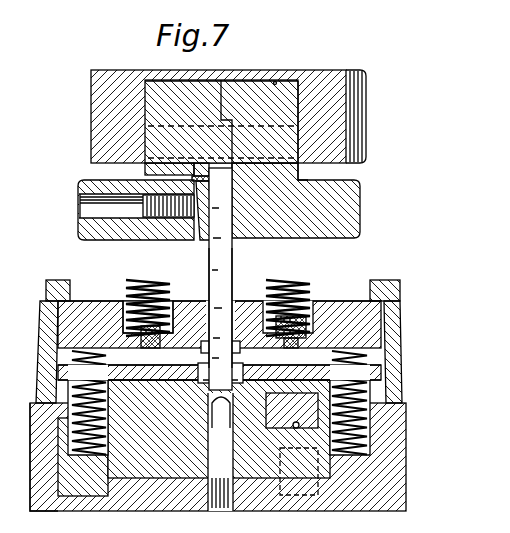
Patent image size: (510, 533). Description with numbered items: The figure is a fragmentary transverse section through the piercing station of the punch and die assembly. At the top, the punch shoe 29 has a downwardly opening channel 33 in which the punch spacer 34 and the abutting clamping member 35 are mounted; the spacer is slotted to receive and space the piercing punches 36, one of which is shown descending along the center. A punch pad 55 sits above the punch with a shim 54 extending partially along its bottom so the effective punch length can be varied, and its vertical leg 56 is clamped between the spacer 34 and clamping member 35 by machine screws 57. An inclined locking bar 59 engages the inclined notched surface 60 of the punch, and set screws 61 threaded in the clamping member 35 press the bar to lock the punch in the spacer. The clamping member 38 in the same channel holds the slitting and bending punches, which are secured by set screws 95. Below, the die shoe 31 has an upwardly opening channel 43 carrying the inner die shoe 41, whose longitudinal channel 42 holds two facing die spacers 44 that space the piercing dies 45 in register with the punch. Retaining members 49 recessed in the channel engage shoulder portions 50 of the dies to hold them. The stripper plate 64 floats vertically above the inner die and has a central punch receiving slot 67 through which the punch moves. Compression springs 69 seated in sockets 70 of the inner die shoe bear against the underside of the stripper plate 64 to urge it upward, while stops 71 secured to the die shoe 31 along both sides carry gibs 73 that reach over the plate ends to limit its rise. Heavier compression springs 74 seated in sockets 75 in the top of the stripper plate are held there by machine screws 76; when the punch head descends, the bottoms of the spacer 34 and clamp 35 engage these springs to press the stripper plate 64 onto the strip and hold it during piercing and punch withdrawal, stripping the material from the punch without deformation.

The punch shoe 29 is at (356, 85).
The die shoe 31 is at (34, 478).
The channel 33 is at (267, 74).
The punch spacer 34 is at (343, 196).
The clamping member 35 is at (115, 232).
The piercing punch 36 is at (216, 267).
The clamping member 38 is at (0, 100).
The inner die shoe 41 is at (356, 472).
The channel 42 is at (288, 420).
The channel 43 is at (72, 486).
The die spacer 44 is at (140, 450).
The piercing die 45 is at (232, 406).
The retaining member 49 is at (122, 374).
The shoulder portion 50 is at (192, 372).
The shim 54 is at (160, 155).
The punch pad 55 is at (291, 162).
The vertical leg 56 is at (215, 110).
The machine screw 57 is at (185, 67).
The locking bar 59 is at (191, 226).
The notched surface 60 is at (223, 238).
The set screw 61 is at (130, 201).
The stripper plate 64 is at (330, 293).
The punch receiving slot 67 is at (226, 344).
The compression spring 69 is at (62, 349).
The spring-receiving socket 70 is at (62, 366).
The stop 71 is at (36, 300).
The gib 73 is at (52, 272).
The compression spring 74 is at (135, 272).
The spring-receiving socket 75 is at (166, 300).
The machine screw 76 is at (286, 310).
The set screw 95 is at (0, 187).